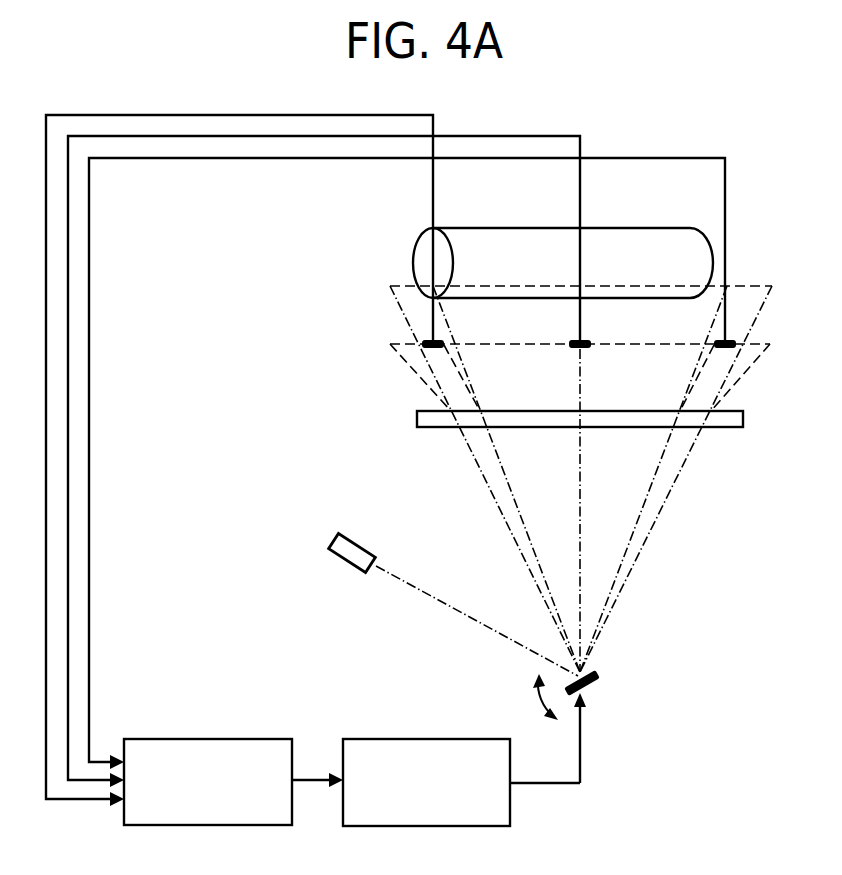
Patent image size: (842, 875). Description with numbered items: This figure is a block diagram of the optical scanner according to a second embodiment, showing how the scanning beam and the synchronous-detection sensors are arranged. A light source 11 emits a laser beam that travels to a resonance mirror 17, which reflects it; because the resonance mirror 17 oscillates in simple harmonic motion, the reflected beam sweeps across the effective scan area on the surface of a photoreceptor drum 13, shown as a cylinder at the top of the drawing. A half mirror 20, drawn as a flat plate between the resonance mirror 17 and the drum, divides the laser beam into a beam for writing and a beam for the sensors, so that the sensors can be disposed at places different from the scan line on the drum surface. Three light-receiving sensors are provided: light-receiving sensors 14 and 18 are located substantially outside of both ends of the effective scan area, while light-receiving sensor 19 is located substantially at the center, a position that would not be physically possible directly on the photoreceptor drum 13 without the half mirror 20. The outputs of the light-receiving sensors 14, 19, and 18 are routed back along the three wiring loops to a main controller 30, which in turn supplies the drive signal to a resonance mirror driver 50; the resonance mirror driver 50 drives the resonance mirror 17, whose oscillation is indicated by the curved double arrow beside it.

The light source 11 is at (334, 538).
The photoreceptor drum 13 is at (620, 228).
The light-receiving sensor 14 is at (427, 341).
The resonance mirror 17 is at (590, 662).
The light-receiving sensor 18 is at (737, 338).
The light-receiving sensor 19 is at (583, 350).
The half mirror 20 is at (743, 418).
The main controller 30 is at (238, 738).
The resonance mirror driver 50 is at (460, 738).